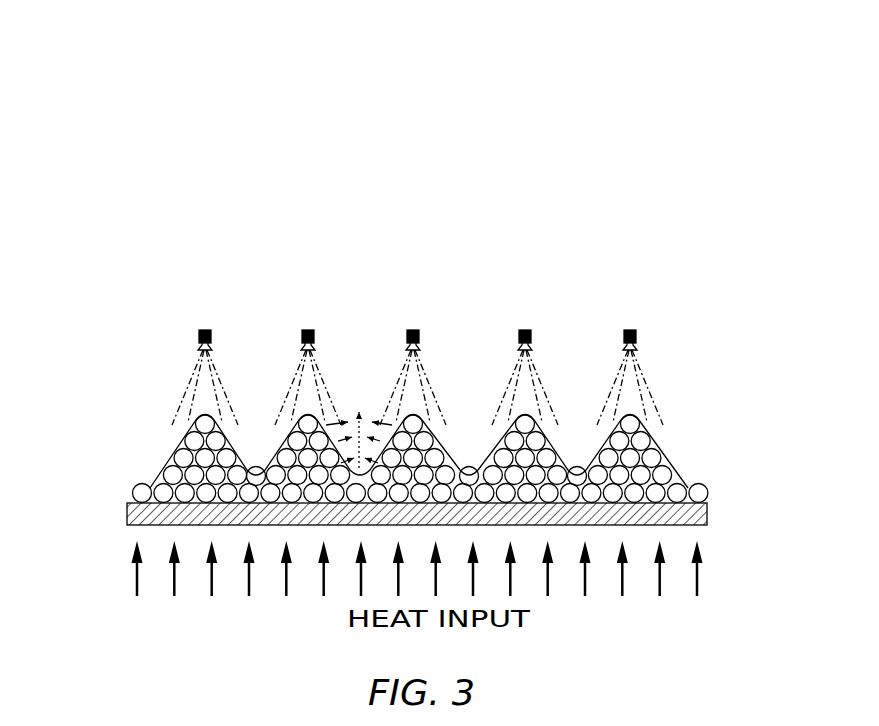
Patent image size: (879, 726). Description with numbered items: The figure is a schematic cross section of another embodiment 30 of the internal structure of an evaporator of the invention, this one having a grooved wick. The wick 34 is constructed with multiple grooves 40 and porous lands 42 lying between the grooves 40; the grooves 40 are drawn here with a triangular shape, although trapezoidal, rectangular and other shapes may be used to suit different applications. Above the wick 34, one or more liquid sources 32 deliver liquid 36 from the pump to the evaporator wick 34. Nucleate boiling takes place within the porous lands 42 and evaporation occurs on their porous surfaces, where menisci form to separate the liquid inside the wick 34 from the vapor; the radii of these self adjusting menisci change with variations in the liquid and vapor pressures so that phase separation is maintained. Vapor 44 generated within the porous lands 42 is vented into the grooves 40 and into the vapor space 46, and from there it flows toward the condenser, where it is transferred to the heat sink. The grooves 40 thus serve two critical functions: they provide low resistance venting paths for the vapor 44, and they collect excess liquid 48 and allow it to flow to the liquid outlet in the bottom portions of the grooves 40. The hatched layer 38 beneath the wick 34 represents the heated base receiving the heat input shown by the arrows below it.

The embodiment of the internal structure of an evaporator 30 is at (693, 140).
The liquid source 32 is at (211, 334).
The wick 34 is at (137, 487).
The liquid 36 is at (608, 392).
The heated substrate 38 is at (128, 527).
The grooves 40 is at (575, 465).
The porous lands 42 is at (192, 418).
The vapor 44 is at (358, 410).
The vapor space 46 is at (370, 353).
The excess liquid 48 is at (255, 474).